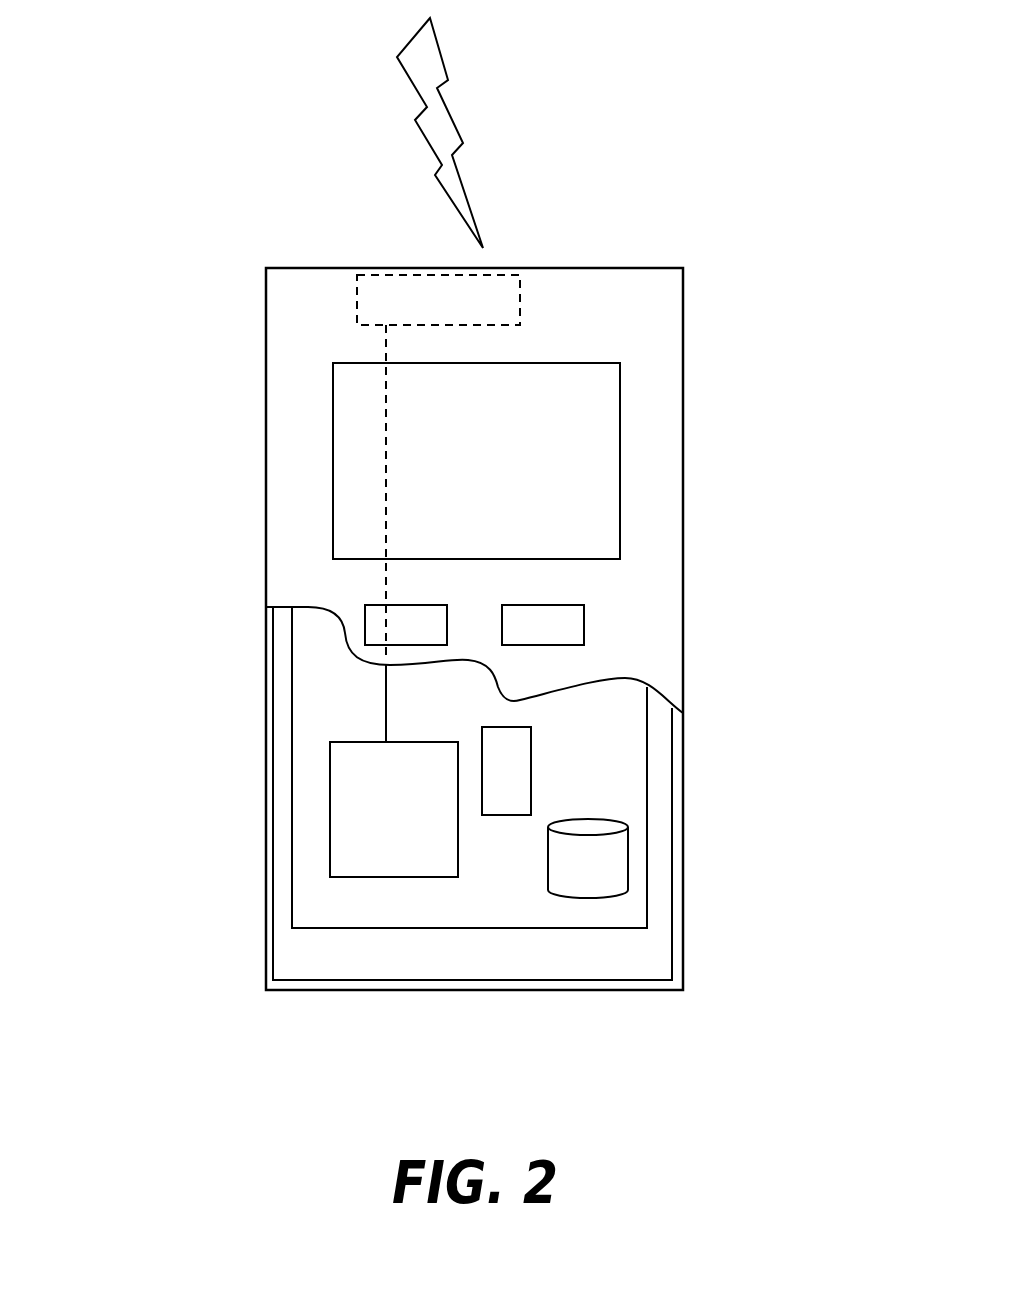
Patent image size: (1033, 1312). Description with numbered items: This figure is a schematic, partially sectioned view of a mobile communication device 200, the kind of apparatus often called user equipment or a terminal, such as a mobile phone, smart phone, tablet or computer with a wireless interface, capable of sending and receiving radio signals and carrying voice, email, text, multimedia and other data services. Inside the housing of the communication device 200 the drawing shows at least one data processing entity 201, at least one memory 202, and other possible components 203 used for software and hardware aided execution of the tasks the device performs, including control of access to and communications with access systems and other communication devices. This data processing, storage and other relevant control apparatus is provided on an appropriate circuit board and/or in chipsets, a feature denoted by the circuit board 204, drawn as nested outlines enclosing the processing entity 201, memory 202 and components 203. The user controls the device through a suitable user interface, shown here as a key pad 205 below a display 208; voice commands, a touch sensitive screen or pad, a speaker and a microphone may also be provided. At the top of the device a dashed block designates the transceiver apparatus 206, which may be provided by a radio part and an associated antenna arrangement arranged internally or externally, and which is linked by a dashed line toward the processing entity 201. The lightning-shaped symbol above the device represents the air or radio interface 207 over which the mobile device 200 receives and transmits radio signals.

The communication device 200 is at (266, 327).
The data processing entity 201 is at (335, 812).
The memory 202 is at (600, 868).
The other components 203 is at (522, 783).
The circuit board 204 is at (307, 902).
The key pad 205 is at (372, 615).
The transceiver apparatus 206 is at (512, 290).
The air or radio interface 207 is at (490, 175).
The display 208 is at (372, 530).